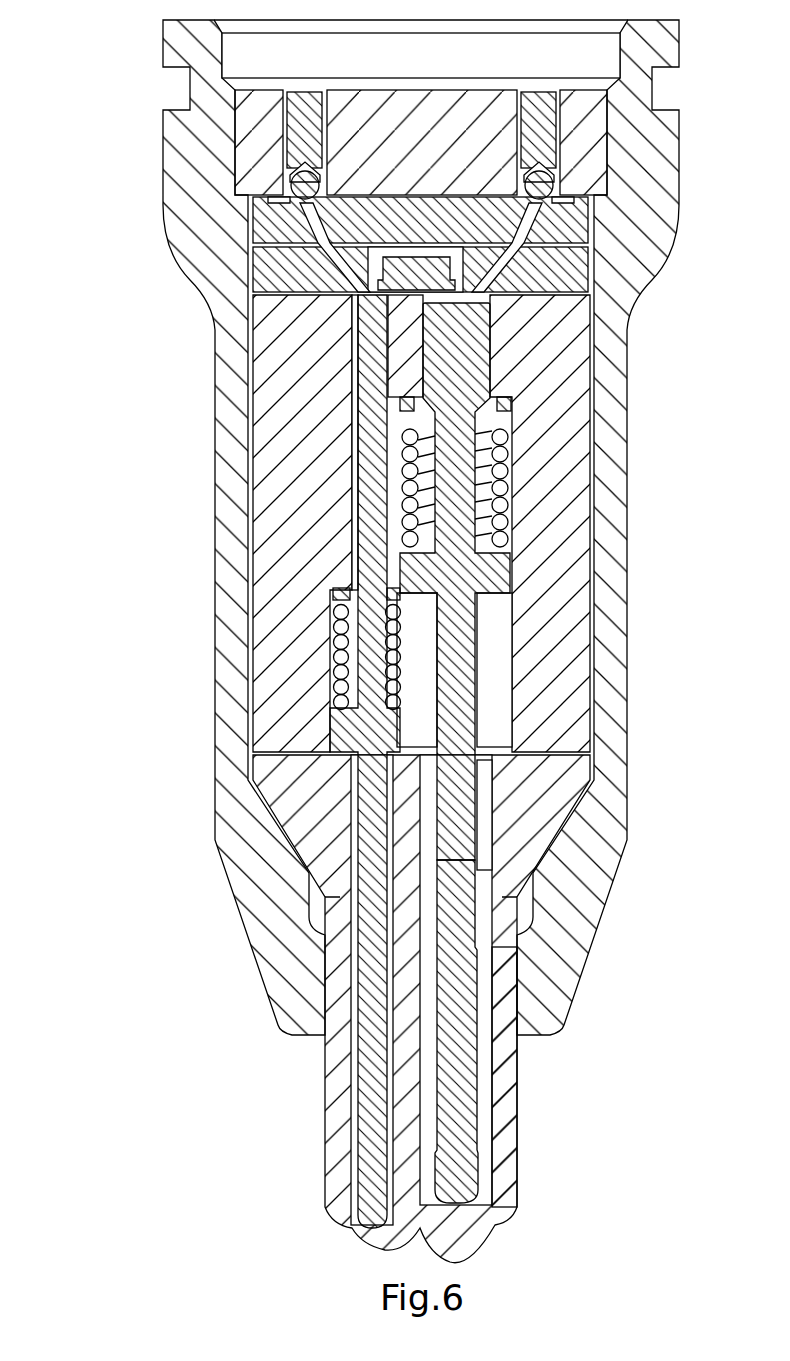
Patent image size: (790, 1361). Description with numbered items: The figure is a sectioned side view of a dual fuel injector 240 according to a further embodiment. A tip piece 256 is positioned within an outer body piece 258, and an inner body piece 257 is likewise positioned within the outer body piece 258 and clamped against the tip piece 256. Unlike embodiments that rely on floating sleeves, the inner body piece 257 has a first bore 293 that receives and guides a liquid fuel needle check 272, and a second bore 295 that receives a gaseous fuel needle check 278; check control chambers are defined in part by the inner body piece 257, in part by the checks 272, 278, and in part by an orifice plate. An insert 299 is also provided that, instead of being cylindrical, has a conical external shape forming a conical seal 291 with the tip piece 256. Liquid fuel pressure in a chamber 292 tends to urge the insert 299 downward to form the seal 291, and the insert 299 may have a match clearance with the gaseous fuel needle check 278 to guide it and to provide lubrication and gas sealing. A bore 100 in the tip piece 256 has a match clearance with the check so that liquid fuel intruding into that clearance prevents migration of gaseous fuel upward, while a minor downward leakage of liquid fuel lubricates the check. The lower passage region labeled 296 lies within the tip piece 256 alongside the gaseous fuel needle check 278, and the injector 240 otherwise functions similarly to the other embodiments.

The fuel injector 240 is at (367, 641).
The tip piece 256 is at (512, 1110).
The inner body piece 257 is at (553, 518).
The outer body piece 258 is at (610, 600).
The liquid fuel needle check 272 is at (375, 1058).
The gaseous fuel needle check 278 is at (463, 1043).
The conical seal 291 is at (513, 753).
The chamber 292 is at (504, 652).
The first bore 293 is at (365, 345).
The second bore 295 is at (478, 338).
The bore 296 is at (480, 1090).
The insert 299 is at (490, 822).
The bore 100 is at (472, 888).